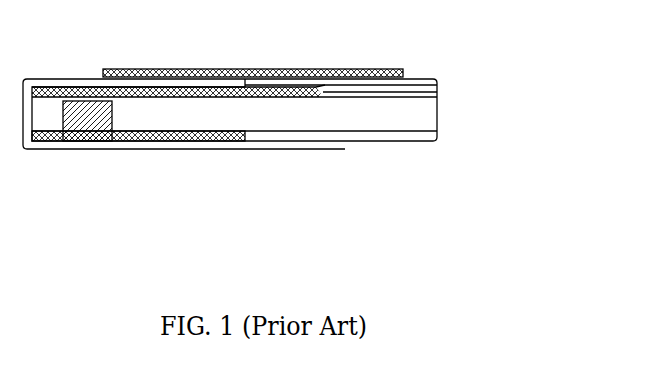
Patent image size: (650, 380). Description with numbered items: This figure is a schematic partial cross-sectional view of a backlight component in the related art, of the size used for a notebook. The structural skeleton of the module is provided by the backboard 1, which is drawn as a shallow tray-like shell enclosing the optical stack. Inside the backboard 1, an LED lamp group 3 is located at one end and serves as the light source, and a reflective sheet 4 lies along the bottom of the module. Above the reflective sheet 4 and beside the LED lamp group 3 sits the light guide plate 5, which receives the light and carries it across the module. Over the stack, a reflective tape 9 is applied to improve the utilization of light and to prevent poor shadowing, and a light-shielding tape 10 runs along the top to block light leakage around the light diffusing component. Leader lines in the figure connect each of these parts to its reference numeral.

The backboard 1 is at (250, 144).
The LED lamp group 3 is at (145, 149).
The reflective sheet 4 is at (283, 158).
The light guide plate 5 is at (426, 102).
The reflective tape 9 is at (280, 64).
The light-shielding tape 10 is at (315, 38).